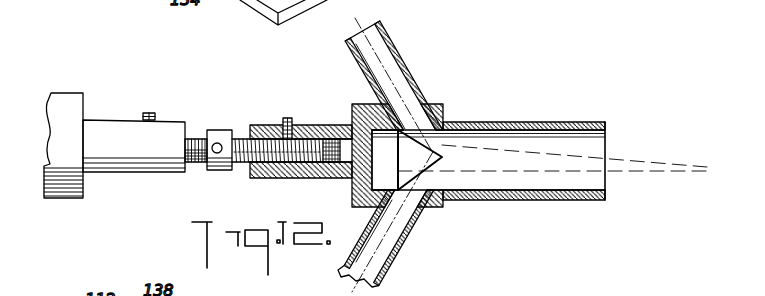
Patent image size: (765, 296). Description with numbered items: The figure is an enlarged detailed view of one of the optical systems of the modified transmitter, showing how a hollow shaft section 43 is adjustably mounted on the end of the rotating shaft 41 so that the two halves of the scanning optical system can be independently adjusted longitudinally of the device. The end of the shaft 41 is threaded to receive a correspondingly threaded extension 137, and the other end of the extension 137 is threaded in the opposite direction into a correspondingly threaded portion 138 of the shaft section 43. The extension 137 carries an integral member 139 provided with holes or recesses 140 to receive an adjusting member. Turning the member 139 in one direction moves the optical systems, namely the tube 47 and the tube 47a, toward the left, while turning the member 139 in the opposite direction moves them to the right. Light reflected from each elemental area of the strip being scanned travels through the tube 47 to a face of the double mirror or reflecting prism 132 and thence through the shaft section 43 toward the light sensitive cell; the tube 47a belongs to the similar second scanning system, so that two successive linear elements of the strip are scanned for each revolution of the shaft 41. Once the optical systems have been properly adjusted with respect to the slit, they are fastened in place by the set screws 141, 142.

The shaft 41 is at (62, 193).
The set screw 141 is at (146, 113).
The threaded extension 137 is at (195, 160).
The integral member 139 is at (224, 172).
The holes or recesses 140 is at (217, 143).
The threaded portion 138 is at (321, 178).
The set screw 142 is at (290, 117).
The tube 47 is at (408, 73).
The tube 47a is at (392, 262).
The hollow shaft section 43 is at (568, 195).
The double reflecting prism 132 is at (418, 152).